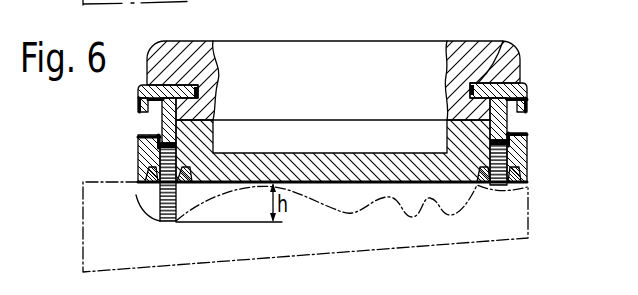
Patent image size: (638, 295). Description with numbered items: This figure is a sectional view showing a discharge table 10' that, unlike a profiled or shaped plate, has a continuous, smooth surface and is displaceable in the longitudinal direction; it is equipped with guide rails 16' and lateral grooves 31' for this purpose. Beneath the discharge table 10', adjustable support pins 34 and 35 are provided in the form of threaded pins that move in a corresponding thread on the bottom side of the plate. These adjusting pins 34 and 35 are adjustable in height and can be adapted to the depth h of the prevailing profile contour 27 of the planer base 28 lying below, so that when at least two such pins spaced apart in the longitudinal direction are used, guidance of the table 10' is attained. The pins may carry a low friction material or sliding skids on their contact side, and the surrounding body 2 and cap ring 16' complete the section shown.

The housing body 2 is at (465, 44).
The guide rail 16' is at (497, 41).
The discharge table 10' is at (332, 134).
The lateral groove 31' is at (526, 132).
The adjustable support pin 34 is at (143, 197).
The adjustable support pin 35 is at (527, 158).
The profile contour 27 is at (360, 210).
The fixture base 28 is at (96, 232).